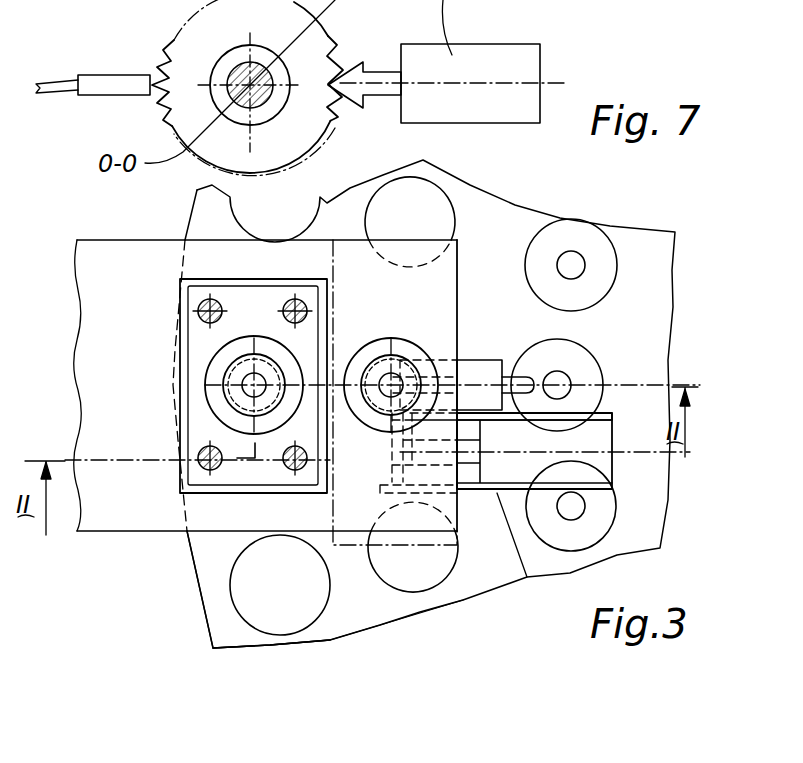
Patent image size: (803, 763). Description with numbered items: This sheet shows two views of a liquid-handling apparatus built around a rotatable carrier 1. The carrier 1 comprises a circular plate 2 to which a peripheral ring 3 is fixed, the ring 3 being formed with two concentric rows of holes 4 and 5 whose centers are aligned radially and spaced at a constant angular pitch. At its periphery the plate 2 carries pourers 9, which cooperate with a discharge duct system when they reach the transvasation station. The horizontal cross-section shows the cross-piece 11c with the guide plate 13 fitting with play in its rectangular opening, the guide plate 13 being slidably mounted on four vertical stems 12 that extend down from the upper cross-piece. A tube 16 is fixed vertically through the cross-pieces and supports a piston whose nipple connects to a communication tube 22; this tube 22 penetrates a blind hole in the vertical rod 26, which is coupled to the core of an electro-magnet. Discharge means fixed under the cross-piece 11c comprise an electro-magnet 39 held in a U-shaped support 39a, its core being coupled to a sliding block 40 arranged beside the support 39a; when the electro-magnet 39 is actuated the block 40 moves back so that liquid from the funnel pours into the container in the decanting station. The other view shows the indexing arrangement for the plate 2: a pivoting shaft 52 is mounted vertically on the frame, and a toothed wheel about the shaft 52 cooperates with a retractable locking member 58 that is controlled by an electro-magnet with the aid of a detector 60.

In FIG. 3, the carrier 1 is at (188, 620).
In FIG. 3, the circular plate 2 is at (640, 507).
In FIG. 3, the peripheral ring 3 is at (200, 545).
In FIG. 3, the holes 4 is at (235, 595).
In FIG. 3, the holes 5 is at (392, 587).
In FIG. 3, the pourers 9 is at (577, 358).
In FIG. 3, the cross-piece 11c is at (125, 515).
In FIG. 3, the vertical stems 12 is at (285, 303).
In FIG. 3, the guide plate 13 is at (202, 337).
In FIG. 3, the tube 16 is at (252, 360).
In FIG. 3, the communication tube 22 is at (242, 390).
In FIG. 3, the vertical rod 26 is at (396, 370).
In FIG. 3, the electro-magnet 39 is at (585, 470).
In FIG. 3, the U-shaped support 39a is at (610, 415).
In FIG. 3, the sliding block 40 is at (476, 362).
In FIG. 7, the pivoting shaft 52 is at (232, 72).
In FIG. 7, the retractable locking member 58 is at (373, 80).
In FIG. 7, the detector 60 is at (108, 80).